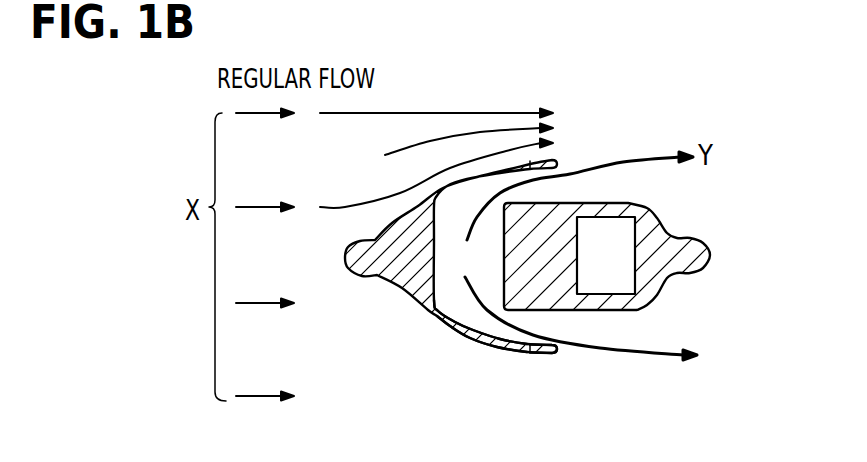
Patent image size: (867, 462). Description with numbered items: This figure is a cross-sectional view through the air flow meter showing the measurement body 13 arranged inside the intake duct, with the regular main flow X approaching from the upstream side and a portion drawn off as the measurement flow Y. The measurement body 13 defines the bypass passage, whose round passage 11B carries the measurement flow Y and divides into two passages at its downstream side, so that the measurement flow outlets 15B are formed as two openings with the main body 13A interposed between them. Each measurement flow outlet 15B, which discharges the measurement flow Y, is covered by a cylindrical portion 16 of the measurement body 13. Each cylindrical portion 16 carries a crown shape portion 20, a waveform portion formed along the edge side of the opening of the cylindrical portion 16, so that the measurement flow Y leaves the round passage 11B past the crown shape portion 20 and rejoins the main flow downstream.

The measurement body 13 is at (393, 283).
The main body 13A is at (658, 232).
The round passage 11B is at (613, 278).
The measurement flow outlets 15B is at (485, 251).
The cylindrical portion 16 is at (475, 340).
The crown shape portion 20 is at (545, 354).